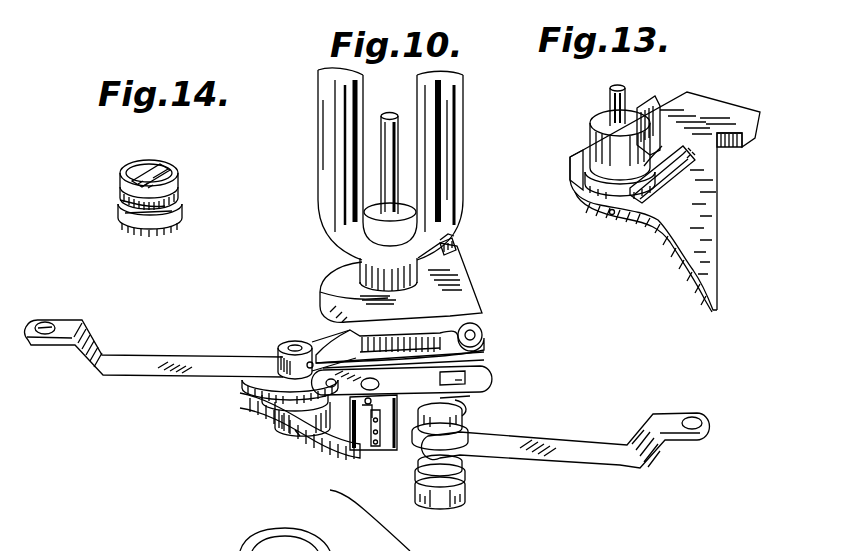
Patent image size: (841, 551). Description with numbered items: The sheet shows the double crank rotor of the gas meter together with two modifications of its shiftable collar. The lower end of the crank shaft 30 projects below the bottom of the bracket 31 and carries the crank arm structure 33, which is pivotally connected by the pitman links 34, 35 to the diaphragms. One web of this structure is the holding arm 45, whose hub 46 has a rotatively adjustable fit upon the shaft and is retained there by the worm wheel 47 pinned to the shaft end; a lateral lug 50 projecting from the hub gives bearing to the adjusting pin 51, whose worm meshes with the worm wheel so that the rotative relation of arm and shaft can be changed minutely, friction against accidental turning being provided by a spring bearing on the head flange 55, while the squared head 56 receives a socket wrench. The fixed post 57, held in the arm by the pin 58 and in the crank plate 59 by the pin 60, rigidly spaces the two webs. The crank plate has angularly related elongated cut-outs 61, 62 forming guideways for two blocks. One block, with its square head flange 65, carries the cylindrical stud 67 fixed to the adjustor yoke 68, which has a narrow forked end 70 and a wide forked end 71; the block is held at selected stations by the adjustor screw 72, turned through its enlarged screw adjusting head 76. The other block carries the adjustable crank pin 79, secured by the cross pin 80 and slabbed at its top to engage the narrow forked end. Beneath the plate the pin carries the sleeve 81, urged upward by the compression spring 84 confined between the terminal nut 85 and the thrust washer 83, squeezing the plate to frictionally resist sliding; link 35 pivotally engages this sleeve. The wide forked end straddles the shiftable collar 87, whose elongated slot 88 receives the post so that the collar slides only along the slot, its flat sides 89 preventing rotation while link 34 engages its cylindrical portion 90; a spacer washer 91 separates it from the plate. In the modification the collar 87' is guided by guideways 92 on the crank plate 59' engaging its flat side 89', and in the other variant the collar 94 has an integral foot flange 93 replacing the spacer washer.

In FIG. 10, the crank shaft 30 is at (390, 116).
In FIG. 10, the bracket 31 is at (334, 186).
In FIG. 10, the crank arm structure 33 is at (490, 282).
In FIG. 10, the pitman link 34 is at (137, 358).
In FIG. 10, the pitman link 35 is at (602, 465).
In FIG. 10, the holding arm 45 is at (336, 282).
In FIG. 10, the hub 46 is at (360, 268).
In FIG. 10, the worm wheel 47 is at (420, 342).
In FIG. 10, the lateral lug 50 is at (481, 330).
In FIG. 10, the adjusting pin 51 is at (476, 333).
In FIG. 10, the head flange 55 is at (457, 249).
In FIG. 10, the head 56 is at (450, 240).
In FIG. 13, the post 57 is at (608, 92).
In FIG. 10, the post 57 is at (288, 346).
In FIG. 10, the pin 58 is at (298, 344).
In FIG. 10, the crank plate 59 is at (300, 440).
In FIG. 13, the crank plate 59' is at (669, 202).
In FIG. 13, the pin 60 is at (612, 215).
In FIG. 10, the pin 60 is at (292, 430).
In FIG. 13, the elongated cut-out 61 is at (740, 149).
In FIG. 10, the elongated cut-out 61 is at (366, 450).
In FIG. 10, the elongated cut-out 62 is at (468, 404).
In FIG. 10, the head flange 65 is at (352, 444).
In FIG. 10, the cylindrical stud 67 is at (430, 369).
In FIG. 10, the adjustor yoke 68 is at (402, 380).
In FIG. 10, the narrow forked end 70 is at (462, 397).
In FIG. 10, the wide forked end 71 is at (262, 398).
In FIG. 10, the adjustor screw 72 is at (378, 448).
In FIG. 10, the screw adjusting head 76 is at (420, 357).
In FIG. 10, the adjustable crank pin 79 is at (450, 381).
In FIG. 10, the cross pin 80 is at (466, 420).
In FIG. 10, the sleeve 81 is at (468, 440).
In FIG. 10, the thrust washer 83 is at (458, 466).
In FIG. 10, the compression spring 84 is at (462, 476).
In FIG. 10, the terminal nut 85 is at (464, 494).
In FIG. 10, the shiftable collar 87 is at (279, 454).
In FIG. 13, the collar 87' is at (551, 170).
In FIG. 14, the elongated slot 88 is at (158, 168).
In FIG. 13, the elongated slot 88 is at (604, 128).
In FIG. 14, the flat sides 89 is at (120, 206).
In FIG. 13, the flat side 89' is at (678, 144).
In FIG. 14, the cylindrical portion 90 is at (170, 186).
In FIG. 13, the cylindrical portion 90 is at (590, 150).
In FIG. 10, the spacer washer 91 is at (283, 410).
In FIG. 13, the guideways 92 is at (652, 106).
In FIG. 14, the foot flange 93 is at (160, 229).
In FIG. 14, the collar 94 is at (138, 156).